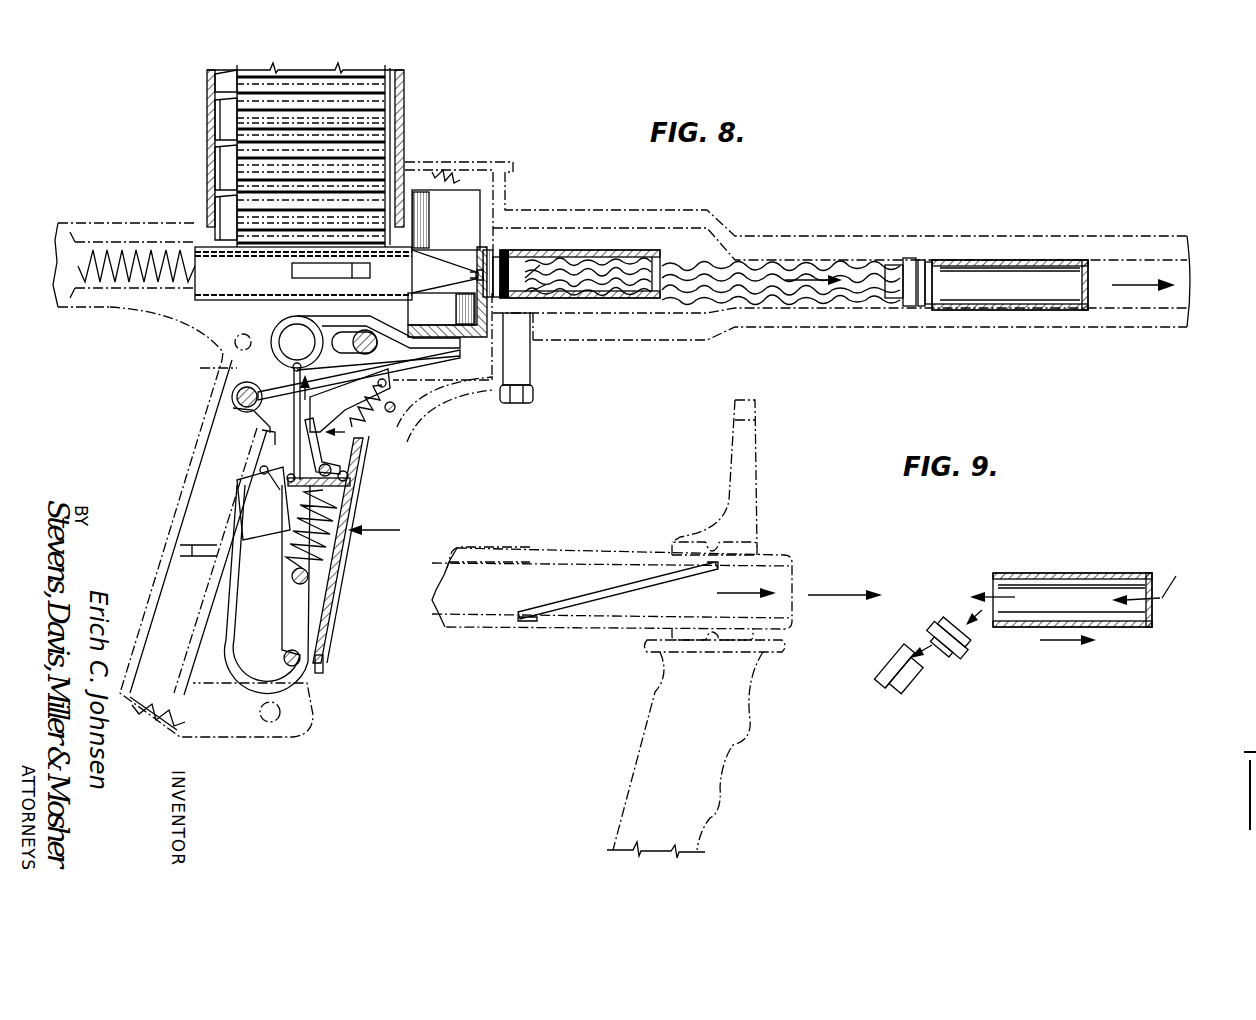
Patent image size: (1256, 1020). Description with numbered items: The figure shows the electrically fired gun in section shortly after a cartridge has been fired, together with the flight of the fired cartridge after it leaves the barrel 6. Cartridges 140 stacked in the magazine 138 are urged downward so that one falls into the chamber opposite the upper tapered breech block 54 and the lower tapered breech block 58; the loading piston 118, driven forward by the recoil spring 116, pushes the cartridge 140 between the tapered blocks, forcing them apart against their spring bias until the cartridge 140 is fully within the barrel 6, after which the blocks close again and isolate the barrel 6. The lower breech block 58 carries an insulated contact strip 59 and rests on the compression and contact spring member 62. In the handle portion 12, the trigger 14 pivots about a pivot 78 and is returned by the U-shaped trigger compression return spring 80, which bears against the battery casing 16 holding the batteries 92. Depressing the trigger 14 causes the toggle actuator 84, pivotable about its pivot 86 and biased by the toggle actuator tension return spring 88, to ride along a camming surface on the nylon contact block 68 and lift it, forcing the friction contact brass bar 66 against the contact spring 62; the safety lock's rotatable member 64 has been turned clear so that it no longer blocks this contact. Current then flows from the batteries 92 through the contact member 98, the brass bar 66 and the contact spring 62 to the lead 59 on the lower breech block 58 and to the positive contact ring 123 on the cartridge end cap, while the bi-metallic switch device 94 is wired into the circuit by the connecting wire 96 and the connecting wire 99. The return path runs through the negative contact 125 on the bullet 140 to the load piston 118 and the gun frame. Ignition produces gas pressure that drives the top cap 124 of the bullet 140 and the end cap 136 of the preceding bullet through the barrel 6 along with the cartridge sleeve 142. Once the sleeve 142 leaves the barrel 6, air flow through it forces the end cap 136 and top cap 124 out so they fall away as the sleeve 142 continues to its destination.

In FIG. 8, the barrel 6 is at (832, 233).
In FIG. 9, the barrel 6 is at (518, 551).
In FIG. 8, the handle portion 12 is at (336, 612).
In FIG. 8, the trigger 14 is at (338, 582).
In FIG. 8, the battery casing 16 is at (190, 478).
In FIG. 8, the upper tapered breech block 54 is at (478, 210).
In FIG. 8, the lower tapered breech block 58 is at (458, 319).
In FIG. 8, the contact strip 59 is at (372, 373).
In FIG. 8, the compression and contact spring member 62 is at (278, 328).
In FIG. 8, the rotatable member 64 is at (330, 343).
In FIG. 8, the friction contact brass bar 66 is at (235, 380).
In FIG. 8, the contact block 68 is at (386, 415).
In FIG. 8, the pivot 78 is at (302, 666).
In FIG. 8, the trigger compression return spring 80 is at (242, 632).
In FIG. 8, the toggle actuator 84 is at (330, 450).
In FIG. 8, the pivot 86 is at (333, 474).
In FIG. 8, the toggle actuator tension return spring 88 is at (340, 540).
In FIG. 8, the batteries 92 is at (205, 520).
In FIG. 8, the bi-metallic switch device 94 is at (256, 505).
In FIG. 8, the electrical connecting wire 96 is at (292, 445).
In FIG. 8, the contact member 98 is at (250, 412).
In FIG. 8, the connecting wire 99 is at (270, 428).
In FIG. 8, the recoil spring 116 is at (121, 250).
In FIG. 8, the loading piston 118 is at (232, 285).
In FIG. 8, the positive contact ring 123 is at (483, 262).
In FIG. 8, the top cap 124 is at (908, 258).
In FIG. 9, the top cap 124 is at (893, 692).
In FIG. 8, the negative contact 125 is at (470, 275).
In FIG. 8, the end cap 136 is at (930, 262).
In FIG. 9, the end cap 136 is at (945, 615).
In FIG. 8, the magazine 138 is at (207, 104).
In FIG. 8, the cartridge 140 is at (405, 115).
In FIG. 8, the cartridge sleeve 142 is at (1040, 258).
In FIG. 9, the cartridge sleeve 142 is at (1065, 573).